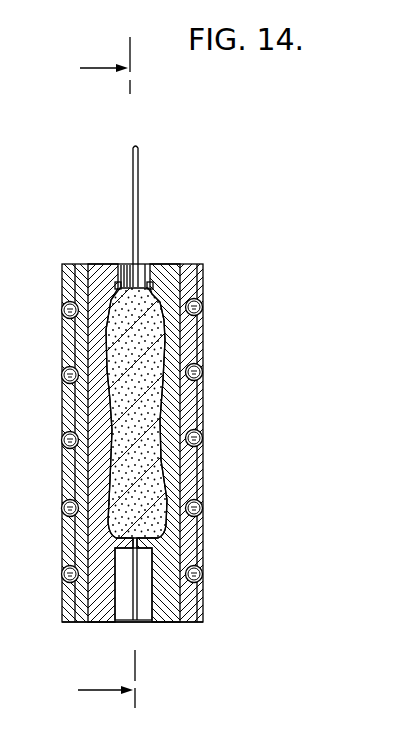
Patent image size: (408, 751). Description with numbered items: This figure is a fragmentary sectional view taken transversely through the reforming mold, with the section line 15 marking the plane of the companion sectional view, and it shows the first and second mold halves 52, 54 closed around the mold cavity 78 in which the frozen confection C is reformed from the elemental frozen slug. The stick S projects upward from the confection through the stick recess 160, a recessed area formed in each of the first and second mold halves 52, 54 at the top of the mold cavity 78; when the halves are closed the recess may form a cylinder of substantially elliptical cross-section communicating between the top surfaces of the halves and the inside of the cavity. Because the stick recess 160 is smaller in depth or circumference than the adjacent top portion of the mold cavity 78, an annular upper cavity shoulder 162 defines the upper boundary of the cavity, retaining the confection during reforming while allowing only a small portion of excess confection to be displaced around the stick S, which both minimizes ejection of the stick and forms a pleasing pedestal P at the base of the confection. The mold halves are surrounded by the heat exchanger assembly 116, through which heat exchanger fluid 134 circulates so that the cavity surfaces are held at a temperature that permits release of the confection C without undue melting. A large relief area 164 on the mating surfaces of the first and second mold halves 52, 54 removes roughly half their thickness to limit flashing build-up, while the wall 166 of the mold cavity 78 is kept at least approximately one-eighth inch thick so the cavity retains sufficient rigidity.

The section line 15 is at (89, 372).
The heat exchanger assembly 116 is at (76, 275).
The mold cavity 78 is at (173, 346).
The frozen confection C is at (163, 490).
The stick S is at (138, 183).
The pedestal P is at (118, 285).
The stick recess 160 is at (141, 264).
The upper cavity shoulder 162 is at (152, 296).
The heat exchanger fluid 134 is at (202, 441).
The wall 166 is at (142, 541).
The relief area 164 is at (137, 604).
The first mold half 52 is at (104, 621).
The second mold half 54 is at (173, 613).